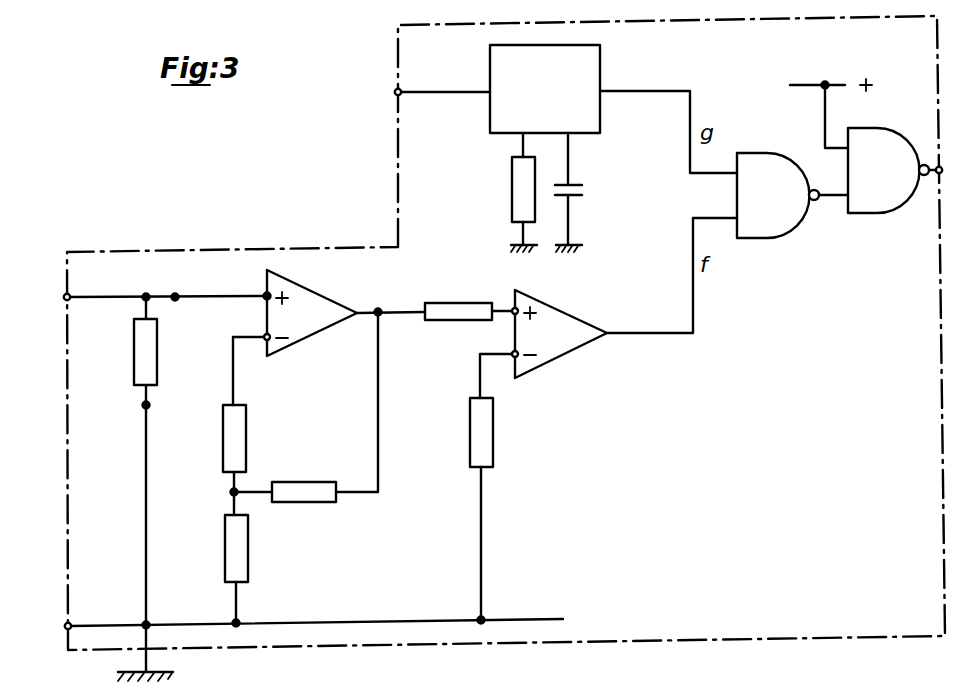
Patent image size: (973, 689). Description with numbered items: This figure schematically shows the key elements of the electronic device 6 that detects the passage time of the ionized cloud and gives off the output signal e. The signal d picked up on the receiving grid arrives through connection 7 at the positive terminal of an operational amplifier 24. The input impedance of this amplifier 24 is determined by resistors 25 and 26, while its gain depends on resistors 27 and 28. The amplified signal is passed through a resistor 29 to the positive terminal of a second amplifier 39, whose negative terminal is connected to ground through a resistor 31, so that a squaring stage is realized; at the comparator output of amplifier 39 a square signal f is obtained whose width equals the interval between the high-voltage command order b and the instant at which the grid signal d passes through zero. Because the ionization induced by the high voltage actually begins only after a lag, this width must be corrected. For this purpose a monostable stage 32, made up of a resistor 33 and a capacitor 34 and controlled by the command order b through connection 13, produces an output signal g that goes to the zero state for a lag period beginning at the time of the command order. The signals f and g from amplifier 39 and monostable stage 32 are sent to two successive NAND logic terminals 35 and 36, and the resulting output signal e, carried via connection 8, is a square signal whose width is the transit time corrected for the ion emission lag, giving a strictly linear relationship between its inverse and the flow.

The device 6 is at (265, 248).
The connection 7 is at (63, 297).
The connection 8 is at (943, 165).
The connection 13 is at (393, 100).
The operational amplifier 24 is at (320, 302).
The resistor 25 is at (157, 356).
The resistor 26 is at (246, 441).
The resistor 27 is at (312, 480).
The resistor 28 is at (248, 554).
The resistor 29 is at (468, 301).
The resistor 31 is at (493, 438).
The monostable stage 32 is at (600, 68).
The resistor 33 is at (511, 191).
The capacitor 34 is at (580, 190).
The NAND logic terminal 35 is at (773, 232).
The NAND logic terminal 36 is at (878, 207).
The amplifier 39 is at (560, 318).